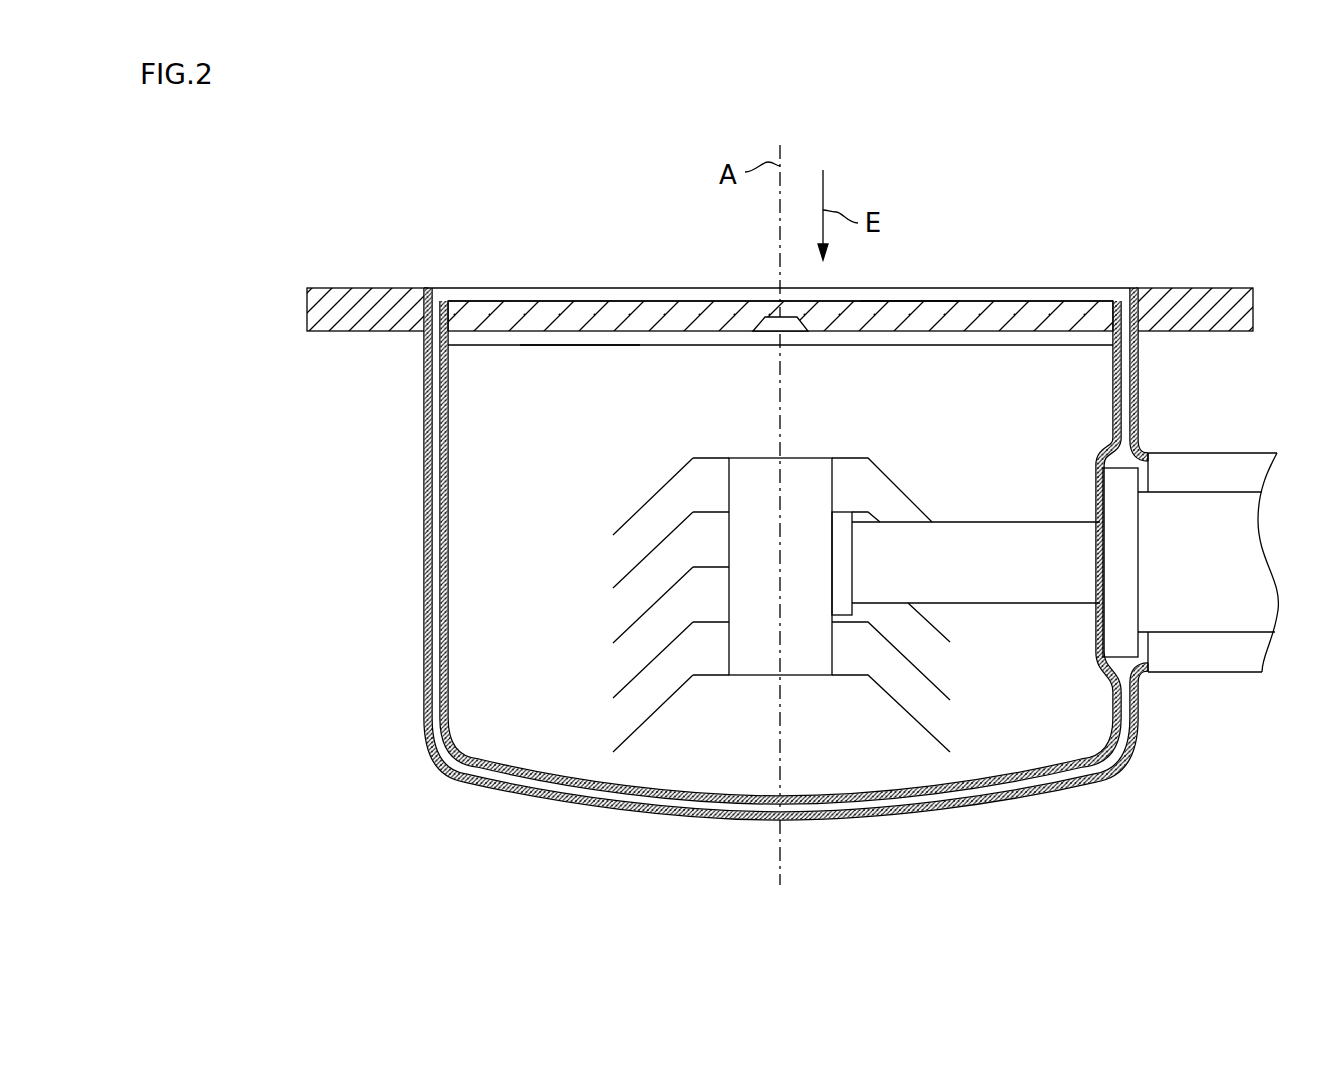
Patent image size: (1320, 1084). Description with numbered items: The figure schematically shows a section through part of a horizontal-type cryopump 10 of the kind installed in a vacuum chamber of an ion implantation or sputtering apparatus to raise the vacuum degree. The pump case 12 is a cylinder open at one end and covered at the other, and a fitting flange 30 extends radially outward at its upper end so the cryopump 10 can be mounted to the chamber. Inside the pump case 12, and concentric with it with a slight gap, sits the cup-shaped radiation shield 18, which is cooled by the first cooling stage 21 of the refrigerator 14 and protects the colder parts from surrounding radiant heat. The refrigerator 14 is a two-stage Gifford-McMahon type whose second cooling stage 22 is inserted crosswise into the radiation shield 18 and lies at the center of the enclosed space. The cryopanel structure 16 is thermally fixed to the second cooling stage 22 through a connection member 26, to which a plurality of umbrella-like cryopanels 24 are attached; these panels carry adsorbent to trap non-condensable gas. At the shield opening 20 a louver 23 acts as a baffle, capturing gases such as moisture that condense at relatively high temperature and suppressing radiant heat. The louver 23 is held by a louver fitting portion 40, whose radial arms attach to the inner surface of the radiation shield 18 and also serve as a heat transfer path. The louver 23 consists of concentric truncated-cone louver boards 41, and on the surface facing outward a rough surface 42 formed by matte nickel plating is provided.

The cryopump 10 is at (519, 156).
The pump case 12 is at (1036, 798).
The refrigerator 14 is at (1207, 633).
The cryopanel structure 16 is at (604, 477).
The radiation shield 18 is at (958, 802).
The shield opening 20 is at (977, 291).
The first cooling stage 21 is at (1138, 482).
The second cooling stage 22 is at (841, 622).
The louver 23 is at (575, 352).
The cryopanel 24 is at (640, 563).
The connection member 26 is at (731, 648).
The fitting flange 30 is at (1188, 287).
The louver fitting portion 40 is at (1057, 346).
The louver board 41 is at (735, 302).
The rough surface 42 is at (903, 300).